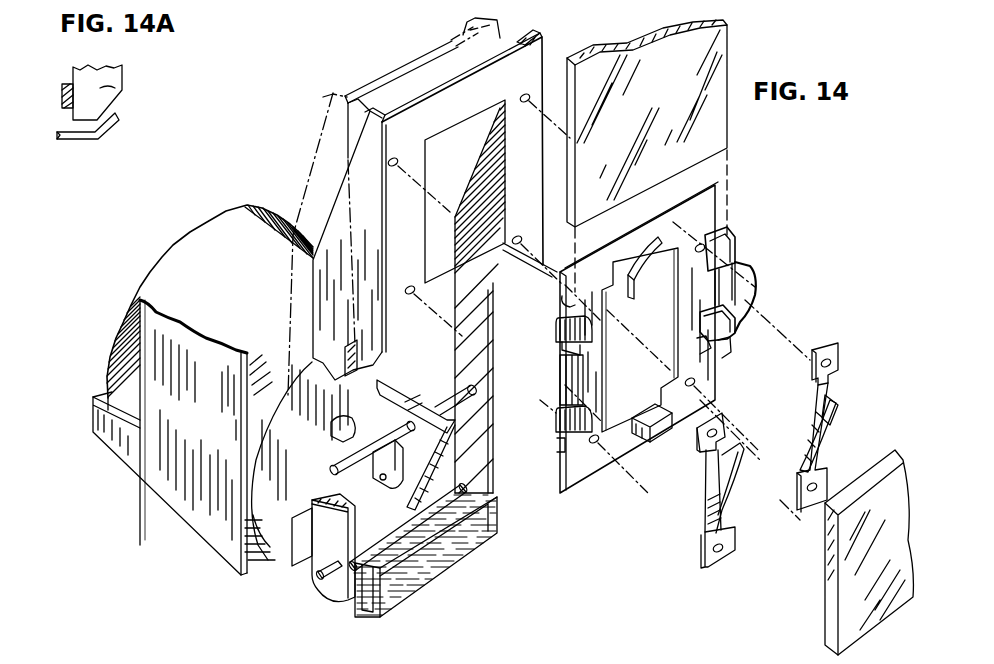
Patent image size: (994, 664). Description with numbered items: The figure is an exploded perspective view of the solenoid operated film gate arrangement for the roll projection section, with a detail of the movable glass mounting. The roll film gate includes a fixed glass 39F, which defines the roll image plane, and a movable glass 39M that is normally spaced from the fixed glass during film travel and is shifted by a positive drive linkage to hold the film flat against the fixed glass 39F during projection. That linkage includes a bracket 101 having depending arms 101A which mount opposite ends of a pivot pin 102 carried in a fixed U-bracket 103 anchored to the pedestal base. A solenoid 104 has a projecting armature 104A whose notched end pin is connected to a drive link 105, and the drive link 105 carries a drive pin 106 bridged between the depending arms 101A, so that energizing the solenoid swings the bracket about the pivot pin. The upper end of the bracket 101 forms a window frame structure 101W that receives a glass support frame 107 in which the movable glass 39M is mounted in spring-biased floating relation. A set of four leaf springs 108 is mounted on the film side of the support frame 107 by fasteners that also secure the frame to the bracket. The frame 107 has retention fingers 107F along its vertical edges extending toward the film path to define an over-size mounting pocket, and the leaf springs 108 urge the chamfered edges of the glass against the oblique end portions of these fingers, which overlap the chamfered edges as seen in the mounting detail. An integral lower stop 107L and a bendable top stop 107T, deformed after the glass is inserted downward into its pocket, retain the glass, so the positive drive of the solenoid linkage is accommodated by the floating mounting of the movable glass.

In FIG. 14A, the movable glass 39M is at (122, 82).
In FIG. 14, the movable glass 39M is at (647, 156).
In FIG. 14, the fixed glass 39F is at (835, 605).
In FIG. 14, the bracket 101 is at (530, 30).
In FIG. 14, the window frame structure 101W is at (443, 108).
In FIG. 14, the depending arms 101A is at (490, 438).
In FIG. 14, the pivot pin 102 is at (410, 517).
In FIG. 14, the fixed U-bracket 103 is at (430, 570).
In FIG. 14, the solenoid 104 is at (237, 334).
In FIG. 14, the projecting armature 104A is at (353, 438).
In FIG. 14, the drive link 105 is at (402, 392).
In FIG. 14, the drive pin 106 is at (475, 396).
In FIG. 14, the glass support frame 107 is at (712, 206).
In FIG. 14, the bendable top stop 107T is at (637, 280).
In FIG. 14, the integral lower stop 107L is at (656, 418).
In FIG. 14A, the retention fingers 107F is at (78, 140).
In FIG. 14, the retention fingers 107F is at (573, 330).
In FIG. 14A, the leaf springs 108 is at (62, 90).
In FIG. 14, the leaf springs 108 is at (733, 485).